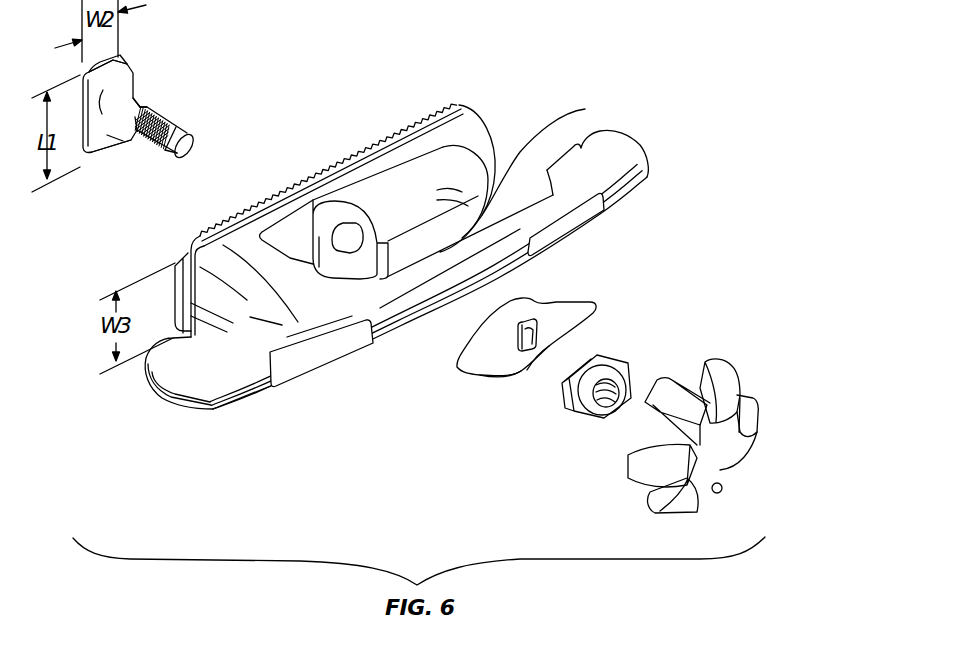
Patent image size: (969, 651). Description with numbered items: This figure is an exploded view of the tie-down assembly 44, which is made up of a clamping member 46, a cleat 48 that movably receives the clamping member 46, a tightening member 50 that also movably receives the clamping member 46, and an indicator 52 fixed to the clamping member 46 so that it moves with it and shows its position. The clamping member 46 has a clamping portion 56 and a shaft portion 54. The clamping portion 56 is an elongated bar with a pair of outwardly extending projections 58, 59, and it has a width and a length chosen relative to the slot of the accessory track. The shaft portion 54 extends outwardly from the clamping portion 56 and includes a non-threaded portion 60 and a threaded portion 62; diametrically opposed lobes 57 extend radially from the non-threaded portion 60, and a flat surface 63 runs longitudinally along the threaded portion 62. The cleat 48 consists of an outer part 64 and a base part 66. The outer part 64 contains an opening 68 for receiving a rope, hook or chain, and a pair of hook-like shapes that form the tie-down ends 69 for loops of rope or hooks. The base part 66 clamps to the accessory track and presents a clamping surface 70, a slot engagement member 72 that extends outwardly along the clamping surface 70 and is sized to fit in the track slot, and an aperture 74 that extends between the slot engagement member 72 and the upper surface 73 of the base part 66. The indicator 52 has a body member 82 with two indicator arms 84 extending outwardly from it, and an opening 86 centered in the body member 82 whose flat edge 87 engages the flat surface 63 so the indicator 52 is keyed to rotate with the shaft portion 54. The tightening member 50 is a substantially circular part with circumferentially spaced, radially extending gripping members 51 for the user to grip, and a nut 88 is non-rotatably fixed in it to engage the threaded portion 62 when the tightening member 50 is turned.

The tie-down assembly 44 is at (690, 62).
The clamping member 46 is at (137, 131).
The cleat 48 is at (407, 257).
The tightening member 50 is at (731, 445).
The gripping members 51 is at (727, 368).
The indicator 52 is at (544, 349).
The shaft portion 54 is at (186, 158).
The clamping portion 56 is at (135, 73).
The lobes 57 is at (148, 106).
The outwardly extending projection 58 is at (113, 157).
The outwardly extending projection 59 is at (119, 62).
The non-threaded portion 60 is at (151, 115).
The threaded portion 62 is at (167, 157).
The flat surface 63 is at (167, 133).
The outer part 64 is at (213, 408).
The base part 66 is at (460, 106).
The opening 68 is at (585, 109).
The tie-down ends 69 is at (633, 137).
The clamping surface 70 is at (192, 244).
The slot engagement member 72 is at (172, 280).
The upper surface 73 is at (447, 162).
The aperture 74 is at (352, 250).
The body member 82 is at (513, 378).
The indicator arms 84 is at (460, 367).
The opening 86 is at (507, 368).
The flat edge 87 is at (538, 333).
The nut 88 is at (580, 413).